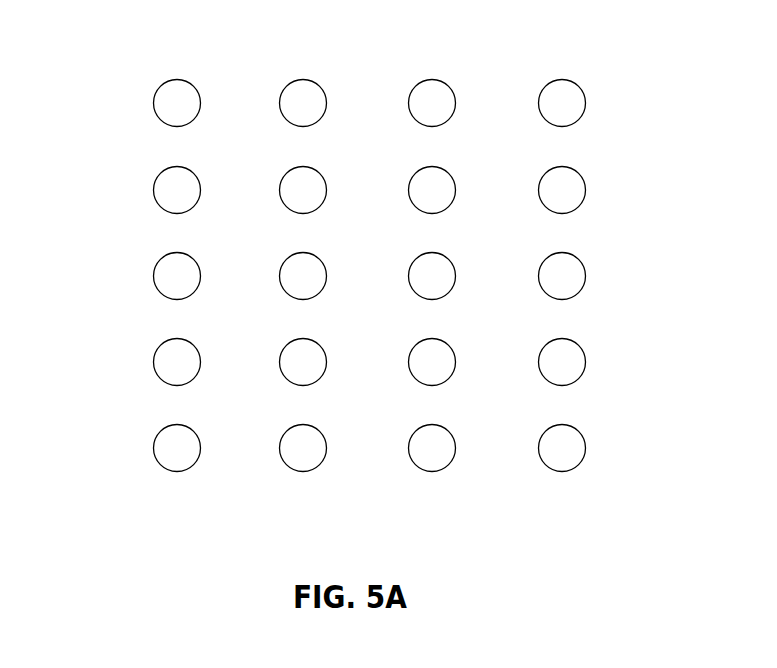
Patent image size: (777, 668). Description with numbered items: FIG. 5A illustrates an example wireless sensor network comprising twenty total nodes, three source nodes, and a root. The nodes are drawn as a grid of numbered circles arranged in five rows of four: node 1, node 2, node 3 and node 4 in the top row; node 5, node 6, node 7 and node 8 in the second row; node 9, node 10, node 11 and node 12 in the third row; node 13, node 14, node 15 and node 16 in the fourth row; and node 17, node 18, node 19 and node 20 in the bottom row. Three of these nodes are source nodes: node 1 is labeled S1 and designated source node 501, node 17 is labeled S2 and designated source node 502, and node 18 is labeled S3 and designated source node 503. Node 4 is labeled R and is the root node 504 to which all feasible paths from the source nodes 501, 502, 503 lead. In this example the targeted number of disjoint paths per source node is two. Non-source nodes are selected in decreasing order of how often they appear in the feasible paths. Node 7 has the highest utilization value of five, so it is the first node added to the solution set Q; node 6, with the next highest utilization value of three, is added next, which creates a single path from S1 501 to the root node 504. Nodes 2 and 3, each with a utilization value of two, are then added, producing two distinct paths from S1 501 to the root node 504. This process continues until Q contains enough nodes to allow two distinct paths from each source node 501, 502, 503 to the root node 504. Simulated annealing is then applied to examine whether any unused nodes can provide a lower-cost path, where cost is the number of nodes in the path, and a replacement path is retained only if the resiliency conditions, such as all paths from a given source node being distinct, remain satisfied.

The node 1 is at (177, 103).
The node 2 is at (303, 103).
The node 3 is at (432, 103).
The node 4 is at (562, 103).
The node 5 is at (177, 190).
The node 6 is at (303, 190).
The node 7 is at (432, 190).
The node 8 is at (562, 190).
The node 9 is at (177, 276).
The node 10 is at (303, 276).
The node 11 is at (432, 276).
The node 12 is at (562, 276).
The node 13 is at (177, 362).
The node 14 is at (303, 362).
The node 15 is at (432, 362).
The node 16 is at (562, 362).
The node 17 is at (177, 448).
The node 18 is at (303, 448).
The node 19 is at (432, 448).
The node 20 is at (562, 448).
The source node S1 is at (153, 103).
The source node S2 is at (153, 451).
The source node S3 is at (303, 472).
The root node R is at (580, 85).
The source node 501 is at (152, 115).
The source node 502 is at (156, 433).
The source node 503 is at (325, 461).
The root node 504 is at (585, 110).